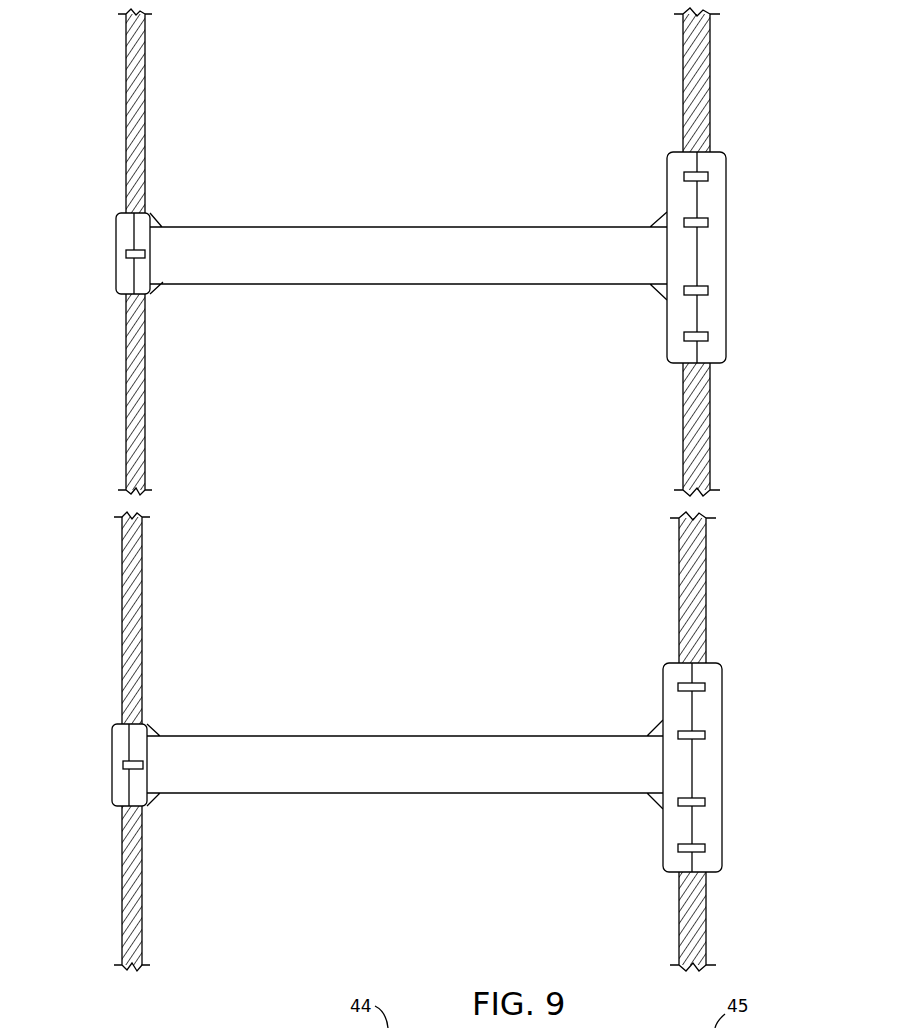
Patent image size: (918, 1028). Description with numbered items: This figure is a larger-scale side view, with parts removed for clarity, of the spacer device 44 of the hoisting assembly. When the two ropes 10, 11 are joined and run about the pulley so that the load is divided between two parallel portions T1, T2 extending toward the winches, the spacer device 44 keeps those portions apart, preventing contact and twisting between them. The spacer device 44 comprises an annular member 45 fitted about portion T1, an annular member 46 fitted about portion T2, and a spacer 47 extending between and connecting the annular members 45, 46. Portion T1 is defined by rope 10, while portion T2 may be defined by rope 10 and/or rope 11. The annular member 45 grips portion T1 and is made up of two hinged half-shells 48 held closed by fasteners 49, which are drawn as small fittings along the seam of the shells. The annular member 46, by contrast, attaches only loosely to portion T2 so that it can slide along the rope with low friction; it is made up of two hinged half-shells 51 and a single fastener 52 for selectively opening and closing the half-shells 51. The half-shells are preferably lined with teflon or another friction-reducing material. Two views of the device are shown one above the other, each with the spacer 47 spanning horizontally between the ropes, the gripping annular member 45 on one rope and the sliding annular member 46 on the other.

The rope 10 is at (693, 90).
The rope 11 is at (133, 107).
The spacer device 44 is at (410, 521).
The annular member 45 is at (693, 491).
The annular member 46 is at (138, 517).
The spacer 47 is at (460, 235).
The hinged half-shells 48 is at (675, 197).
The fasteners 49 is at (707, 179).
The hinged half-shells 51 is at (117, 223).
The fastener 52 is at (125, 253).
The parallel portion T1 is at (156, 613).
The parallel portion T2 is at (658, 578).